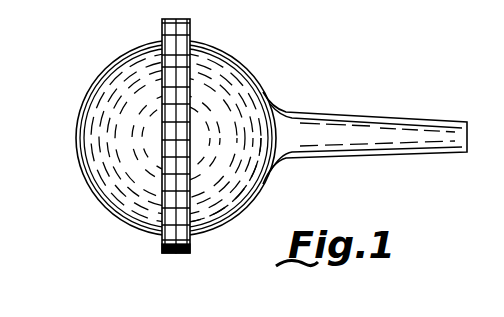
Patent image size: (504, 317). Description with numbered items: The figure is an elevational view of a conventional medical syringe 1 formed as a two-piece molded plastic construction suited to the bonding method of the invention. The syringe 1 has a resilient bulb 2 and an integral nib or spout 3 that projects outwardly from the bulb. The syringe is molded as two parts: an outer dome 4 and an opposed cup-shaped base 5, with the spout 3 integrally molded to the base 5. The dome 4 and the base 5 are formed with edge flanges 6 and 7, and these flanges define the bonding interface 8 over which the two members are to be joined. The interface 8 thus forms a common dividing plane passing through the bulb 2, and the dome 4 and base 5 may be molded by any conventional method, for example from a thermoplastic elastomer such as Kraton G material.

The medical syringe 1 is at (95, 85).
The bulb 2 is at (108, 213).
The nib or spout 3 is at (364, 152).
The outer dome 4 is at (133, 141).
The cup-shaped base 5 is at (235, 146).
The edge flange 6 is at (168, 248).
The edge flange 7 is at (191, 248).
The bonding interface 8 is at (180, 58).